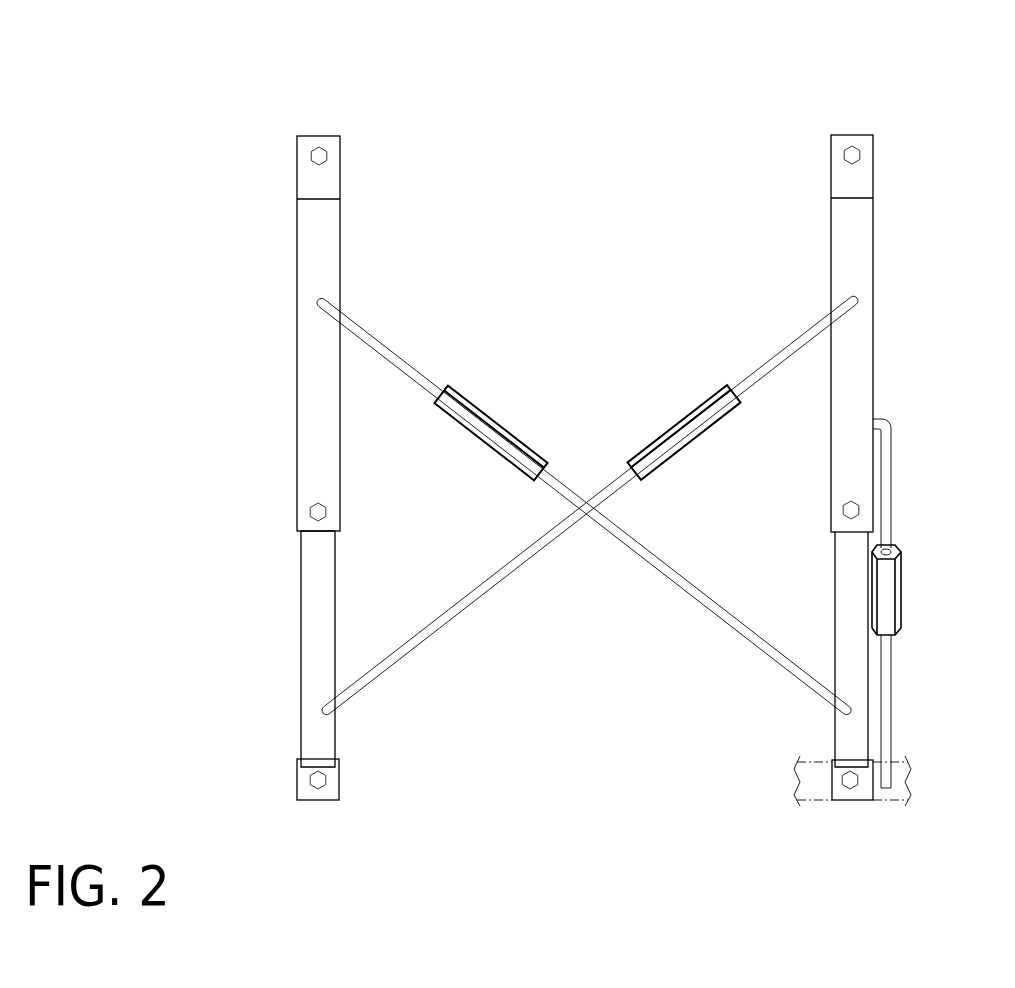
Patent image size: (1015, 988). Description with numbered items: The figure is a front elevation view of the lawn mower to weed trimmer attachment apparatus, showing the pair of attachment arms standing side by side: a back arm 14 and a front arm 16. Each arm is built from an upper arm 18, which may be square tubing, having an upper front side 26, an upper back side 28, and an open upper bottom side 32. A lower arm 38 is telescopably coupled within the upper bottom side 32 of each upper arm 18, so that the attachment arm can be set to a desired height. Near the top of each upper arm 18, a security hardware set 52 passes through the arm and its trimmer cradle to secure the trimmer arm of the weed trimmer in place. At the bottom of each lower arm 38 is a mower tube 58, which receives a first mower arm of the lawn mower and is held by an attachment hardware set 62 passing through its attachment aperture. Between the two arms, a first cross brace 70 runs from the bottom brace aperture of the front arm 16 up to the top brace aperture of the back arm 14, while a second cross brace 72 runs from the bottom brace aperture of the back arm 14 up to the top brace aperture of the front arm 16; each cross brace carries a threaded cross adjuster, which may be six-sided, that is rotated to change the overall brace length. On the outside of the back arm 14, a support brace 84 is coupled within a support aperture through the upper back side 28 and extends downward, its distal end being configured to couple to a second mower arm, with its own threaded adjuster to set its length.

The back arm 14 is at (876, 465).
The front arm 16 is at (312, 468).
The upper arm 18 is at (320, 383).
The upper front side 26 is at (840, 420).
The upper back side 28 is at (873, 382).
The upper bottom side 32 is at (312, 532).
The lower arm 38 is at (318, 611).
The security hardware set 52 is at (853, 155).
The mower tube 58 is at (845, 802).
The attachment hardware set 62 is at (857, 780).
The first cross brace 70 is at (475, 600).
The second cross brace 72 is at (667, 573).
The support brace 84 is at (888, 680).